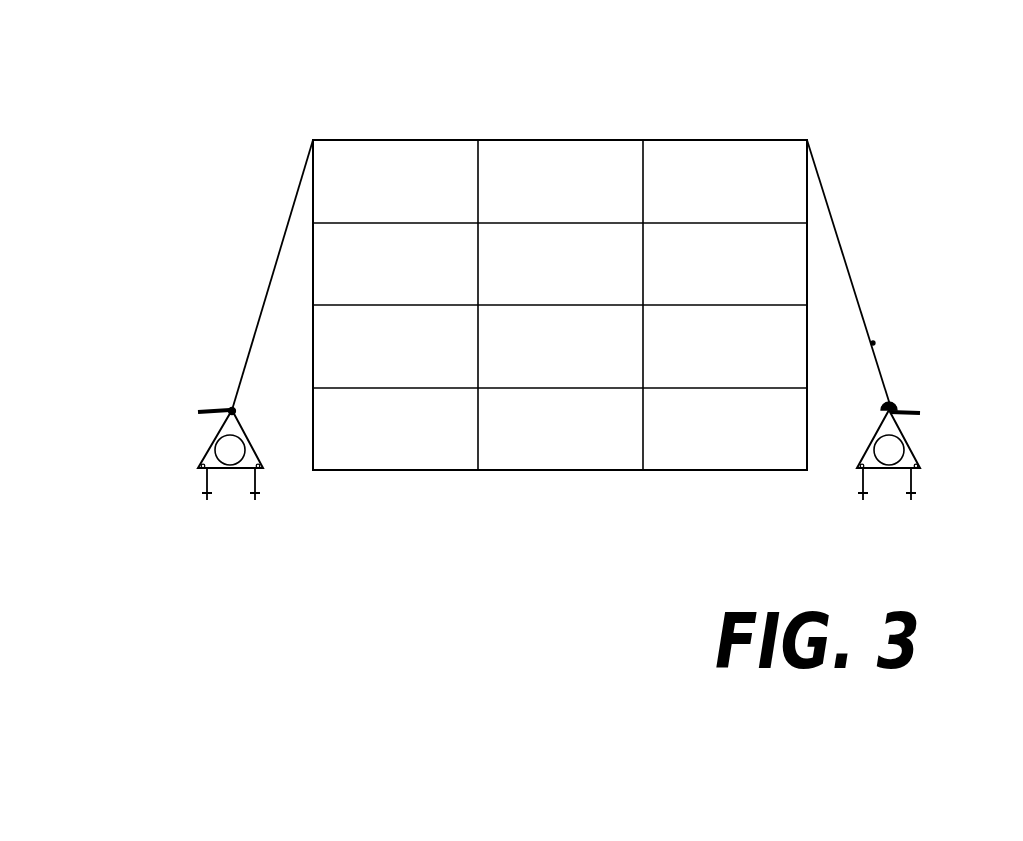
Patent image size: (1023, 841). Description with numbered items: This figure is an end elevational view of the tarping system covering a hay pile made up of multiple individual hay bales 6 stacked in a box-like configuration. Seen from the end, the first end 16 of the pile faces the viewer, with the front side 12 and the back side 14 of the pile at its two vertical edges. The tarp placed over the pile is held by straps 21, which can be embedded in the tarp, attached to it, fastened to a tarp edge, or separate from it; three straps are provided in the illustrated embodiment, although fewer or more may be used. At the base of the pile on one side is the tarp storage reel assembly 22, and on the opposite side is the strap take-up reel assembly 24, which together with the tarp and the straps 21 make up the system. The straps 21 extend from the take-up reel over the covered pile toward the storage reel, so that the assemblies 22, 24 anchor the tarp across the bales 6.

The hay bales 6 is at (568, 358).
The front side 12 is at (807, 293).
The back side 14 is at (313, 290).
The first end 16 is at (567, 183).
The straps 21 is at (881, 366).
The tarp storage reel assembly 22 is at (198, 448).
The strap take-up reel assembly 24 is at (912, 443).